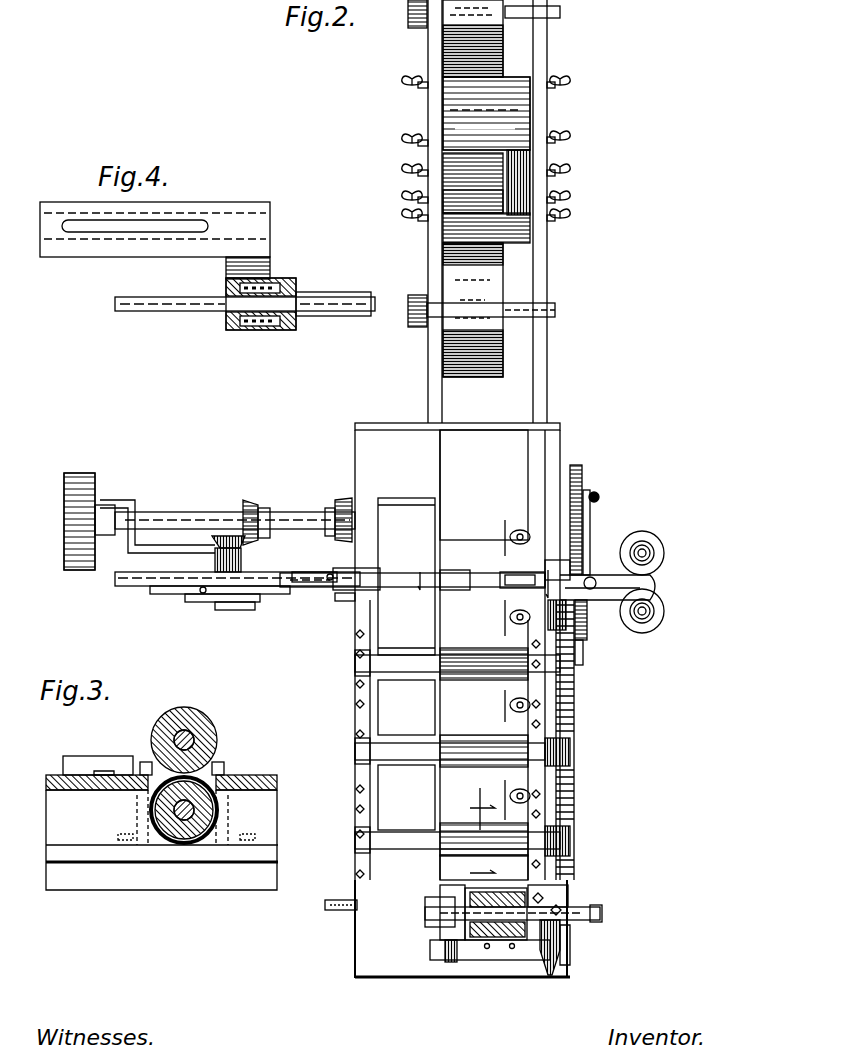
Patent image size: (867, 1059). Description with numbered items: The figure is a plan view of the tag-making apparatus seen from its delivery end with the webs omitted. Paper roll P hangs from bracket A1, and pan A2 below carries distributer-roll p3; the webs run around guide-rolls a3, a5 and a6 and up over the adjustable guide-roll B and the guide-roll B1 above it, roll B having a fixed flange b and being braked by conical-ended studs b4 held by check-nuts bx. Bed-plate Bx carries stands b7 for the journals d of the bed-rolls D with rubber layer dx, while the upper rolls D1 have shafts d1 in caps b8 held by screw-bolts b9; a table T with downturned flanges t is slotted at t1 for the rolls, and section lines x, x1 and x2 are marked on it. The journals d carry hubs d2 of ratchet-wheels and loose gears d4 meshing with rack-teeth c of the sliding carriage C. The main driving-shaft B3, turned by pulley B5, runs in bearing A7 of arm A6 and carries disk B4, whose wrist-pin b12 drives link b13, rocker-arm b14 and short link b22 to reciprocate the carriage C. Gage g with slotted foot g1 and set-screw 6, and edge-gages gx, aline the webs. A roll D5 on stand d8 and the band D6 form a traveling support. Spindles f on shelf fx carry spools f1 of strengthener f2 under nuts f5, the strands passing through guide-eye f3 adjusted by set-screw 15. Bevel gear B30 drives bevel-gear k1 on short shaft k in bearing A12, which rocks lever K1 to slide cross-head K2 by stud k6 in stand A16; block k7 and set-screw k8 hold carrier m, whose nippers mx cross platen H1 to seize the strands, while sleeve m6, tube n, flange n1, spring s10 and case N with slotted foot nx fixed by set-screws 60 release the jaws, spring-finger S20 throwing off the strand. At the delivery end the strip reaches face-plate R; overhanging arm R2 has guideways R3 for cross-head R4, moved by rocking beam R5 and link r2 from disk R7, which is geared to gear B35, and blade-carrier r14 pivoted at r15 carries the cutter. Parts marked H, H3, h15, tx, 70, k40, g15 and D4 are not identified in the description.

In FIG. 2, the bracket A1 is at (428, 40).
In FIG. 2, the guide-roll a5 is at (515, 85).
In FIG. 2, the guide-roll a6 is at (528, 142).
In FIG. 2, the distributer-roll p3 is at (520, 112).
In FIG. 2, the guide-roll B1 is at (462, 170).
In FIG. 2, the adjustable guide-roll B is at (465, 212).
In FIG. 2, the guide-roll a3 is at (530, 238).
In FIG. 2, the roll of paper P is at (443, 360).
In FIG. 2, the conical-ended stud b4 is at (408, 182).
In FIG. 2, the check-nut bx is at (410, 208).
In FIG. 2, the table T is at (476, 440).
In FIG. 3, the table T is at (48, 778).
In FIG. 2, the roll D5 is at (378, 500).
In FIG. 2, the endless band D6 is at (406, 708).
In FIG. 2, the shaft d1 is at (425, 660).
In FIG. 3, the shaft d1 is at (180, 738).
In FIG. 2, the journal d is at (400, 740).
In FIG. 3, the journal d is at (150, 814).
In FIG. 2, the shaft H is at (466, 560).
In FIG. 2, the platen H1 is at (450, 585).
In FIG. 2, the coupling H3 is at (512, 575).
In FIG. 2, the pin h15 is at (482, 563).
In FIG. 2, the case N is at (355, 590).
In FIG. 4, the case N is at (268, 332).
In FIG. 2, the spring-finger S20 is at (396, 568).
In FIG. 2, the section line x2 is at (477, 571).
In FIG. 2, the nippers or jaws mx is at (420, 599).
In FIG. 2, the guide tx is at (460, 535).
In FIG. 2, the stand d8 is at (440, 505).
In FIG. 2, the upturned gage g is at (505, 525).
In FIG. 2, the slotted foot g1 is at (525, 535).
In FIG. 2, the edge-gage gx is at (505, 612).
In FIG. 2, the set-screw 6 is at (518, 530).
In FIG. 2, the section line x1 is at (546, 753).
In FIG. 2, the section line x is at (473, 828).
In FIG. 2, the hub d2 is at (580, 742).
In FIG. 2, the gear d4 is at (560, 832).
In FIG. 2, the transverse slot t1 is at (440, 663).
In FIG. 3, the transverse slot t1 is at (140, 834).
In FIG. 2, the rack-teeth c is at (560, 790).
In FIG. 2, the sliding carriage C is at (575, 688).
In FIG. 2, the disk B4 is at (578, 465).
In FIG. 2, the link b13 is at (598, 497).
In FIG. 2, the adjustable wrist-pin b12 is at (590, 495).
In FIG. 2, the strengthener material f2 is at (600, 588).
In FIG. 2, the spool f1 is at (650, 535).
In FIG. 2, the upright spindle f is at (650, 553).
In FIG. 2, the nut f5 is at (654, 553).
In FIG. 2, the shelf fx is at (652, 582).
In FIG. 2, the guide-eye f3 is at (592, 570).
In FIG. 2, the pan A2 is at (610, 570).
In FIG. 2, the set-screw 15 is at (589, 594).
In FIG. 2, the fixed annular flange b is at (588, 618).
In FIG. 2, the rocker-arm b14 is at (588, 640).
In FIG. 2, the short link b22 is at (580, 650).
In FIG. 2, the pulley B5 is at (64, 508).
In FIG. 2, the bearing A7 is at (118, 500).
In FIG. 2, the arm A6 is at (172, 555).
In FIG. 2, the main driving-shaft B3 is at (195, 515).
In FIG. 2, the bevel-gear k1 is at (245, 530).
In FIG. 2, the short shaft k is at (212, 558).
In FIG. 2, the bevel gear B30 is at (252, 505).
In FIG. 2, the bevel gear B35 is at (338, 500).
In FIG. 2, the transverse bearing A12 is at (245, 560).
In FIG. 2, the stand A16 is at (115, 580).
In FIG. 2, the set-screw 60 is at (322, 572).
In FIG. 2, the upturned block k7 is at (178, 590).
In FIG. 2, the set-screw k8 is at (190, 598).
In FIG. 2, the pin or stud k6 is at (200, 605).
In FIG. 2, the lever K1 is at (212, 610).
In FIG. 2, the pin 70 is at (240, 605).
In FIG. 2, the cross-head K2 is at (262, 604).
In FIG. 2, the bar k40 is at (272, 596).
In FIG. 2, the slotted foot nx is at (328, 582).
In FIG. 4, the slotted foot nx is at (232, 205).
In FIG. 2, the carrier rod m is at (302, 600).
In FIG. 4, the carrier rod m is at (170, 312).
In FIG. 2, the sleeve m6 is at (333, 656).
In FIG. 4, the sleeve m6 is at (335, 294).
In FIG. 2, the bed-plate Bx is at (368, 958).
In FIG. 2, the disk R7 is at (330, 910).
In FIG. 2, the link r2 is at (603, 910).
In FIG. 2, the cross-head R4 is at (440, 920).
In FIG. 2, the guideway R3 is at (458, 940).
In FIG. 2, the face-plate R is at (508, 950).
In FIG. 2, the blade-carrier r14 is at (435, 966).
In FIG. 2, the pivot r15 is at (552, 978).
In FIG. 2, the pin g15 is at (560, 975).
In FIG. 2, the overhanging arm R2 is at (560, 905).
In FIG. 2, the rocking beam R5 is at (580, 905).
In FIG. 3, the upper roll D1 is at (160, 725).
In FIG. 3, the bed-roll D is at (190, 840).
In FIG. 3, the downturned flange t is at (270, 832).
In FIG. 3, the screw-bolt b9 is at (212, 770).
In FIG. 3, the cap b8 is at (210, 777).
In FIG. 3, the yielding layer dx is at (218, 810).
In FIG. 3, the stand b7 is at (210, 845).
In FIG. 3, the roller D4 is at (340, 850).
In FIG. 4, the tube n is at (272, 285).
In FIG. 4, the spring s10 is at (245, 330).
In FIG. 4, the flange n1 is at (288, 332).